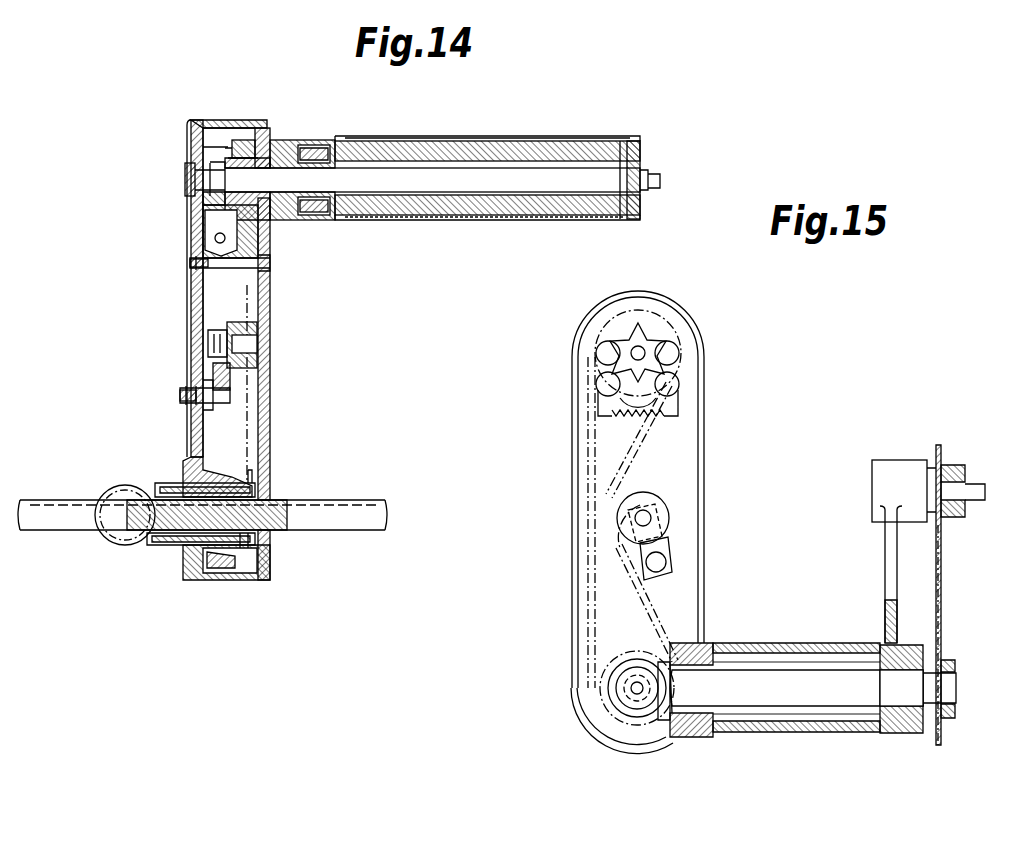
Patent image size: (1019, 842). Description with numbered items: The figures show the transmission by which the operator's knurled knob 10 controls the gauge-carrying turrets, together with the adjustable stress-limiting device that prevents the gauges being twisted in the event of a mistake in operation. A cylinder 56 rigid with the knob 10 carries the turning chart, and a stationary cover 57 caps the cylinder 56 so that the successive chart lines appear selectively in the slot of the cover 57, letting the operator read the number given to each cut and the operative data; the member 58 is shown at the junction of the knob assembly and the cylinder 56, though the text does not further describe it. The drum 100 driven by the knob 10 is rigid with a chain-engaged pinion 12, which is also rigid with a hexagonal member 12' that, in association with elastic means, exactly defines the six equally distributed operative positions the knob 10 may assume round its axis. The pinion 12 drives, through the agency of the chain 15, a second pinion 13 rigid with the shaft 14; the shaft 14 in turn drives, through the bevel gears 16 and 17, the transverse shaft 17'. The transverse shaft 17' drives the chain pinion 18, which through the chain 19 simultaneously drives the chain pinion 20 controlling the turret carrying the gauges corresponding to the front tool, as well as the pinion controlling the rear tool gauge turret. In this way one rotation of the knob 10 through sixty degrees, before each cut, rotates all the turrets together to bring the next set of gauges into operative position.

In FIG. 14, the knurled knob 10 is at (335, 221).
In FIG. 14, the chain-engaged pinion 12 is at (241, 119).
In FIG. 15, the hexagonal member 12' is at (658, 347).
In FIG. 14, the second pinion 13 is at (252, 482).
In FIG. 14, the shaft 14 is at (342, 525).
In FIG. 14, the chain 15 is at (245, 296).
In FIG. 15, the chain 15 is at (640, 471).
In FIG. 15, the bevel gear 16 is at (613, 717).
In FIG. 14, the bevel gear 17 is at (122, 540).
In FIG. 15, the bevel gear 17 is at (685, 709).
In FIG. 15, the transverse shaft 17' is at (813, 704).
In FIG. 15, the chain pinion 18 is at (942, 656).
In FIG. 15, the chain 19 is at (941, 600).
In FIG. 15, the chain pinion 20 is at (942, 522).
In FIG. 14, the cylinder 56 is at (575, 152).
In FIG. 14, the stationary cover 57 is at (585, 221).
In FIG. 14, the bearing 58 is at (300, 152).
In FIG. 14, the drum 100 is at (262, 136).